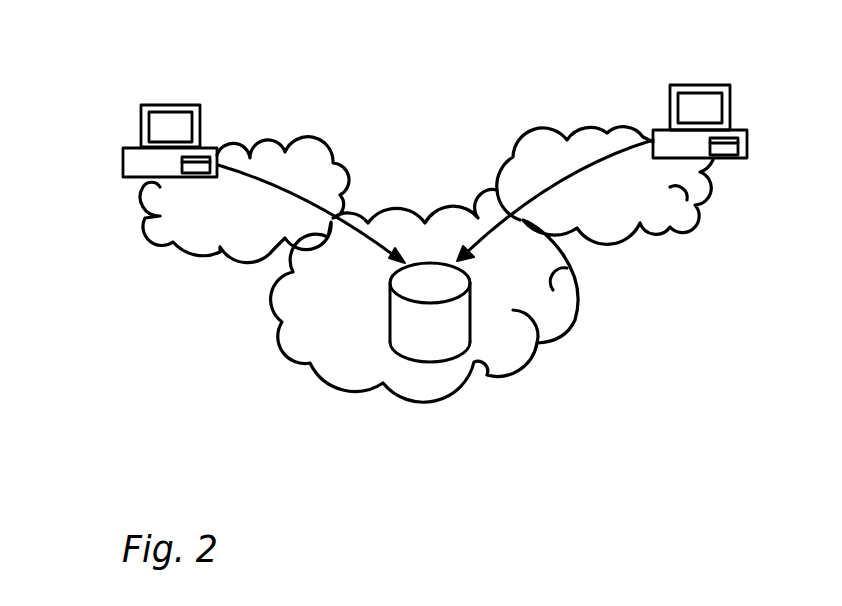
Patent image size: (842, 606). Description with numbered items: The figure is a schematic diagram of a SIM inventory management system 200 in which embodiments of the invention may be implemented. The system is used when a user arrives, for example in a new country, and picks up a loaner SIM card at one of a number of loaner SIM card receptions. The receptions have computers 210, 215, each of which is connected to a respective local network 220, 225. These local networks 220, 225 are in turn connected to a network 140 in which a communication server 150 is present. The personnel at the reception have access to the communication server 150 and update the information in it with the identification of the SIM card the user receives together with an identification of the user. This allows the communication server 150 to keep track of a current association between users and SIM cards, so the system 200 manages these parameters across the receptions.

The SIM inventory management system 200 is at (66, 26).
The computer 210 is at (124, 170).
The computer 215 is at (747, 148).
The local network 220 is at (141, 234).
The local network 225 is at (675, 227).
The network 140 is at (273, 343).
The communication server 150 is at (472, 322).